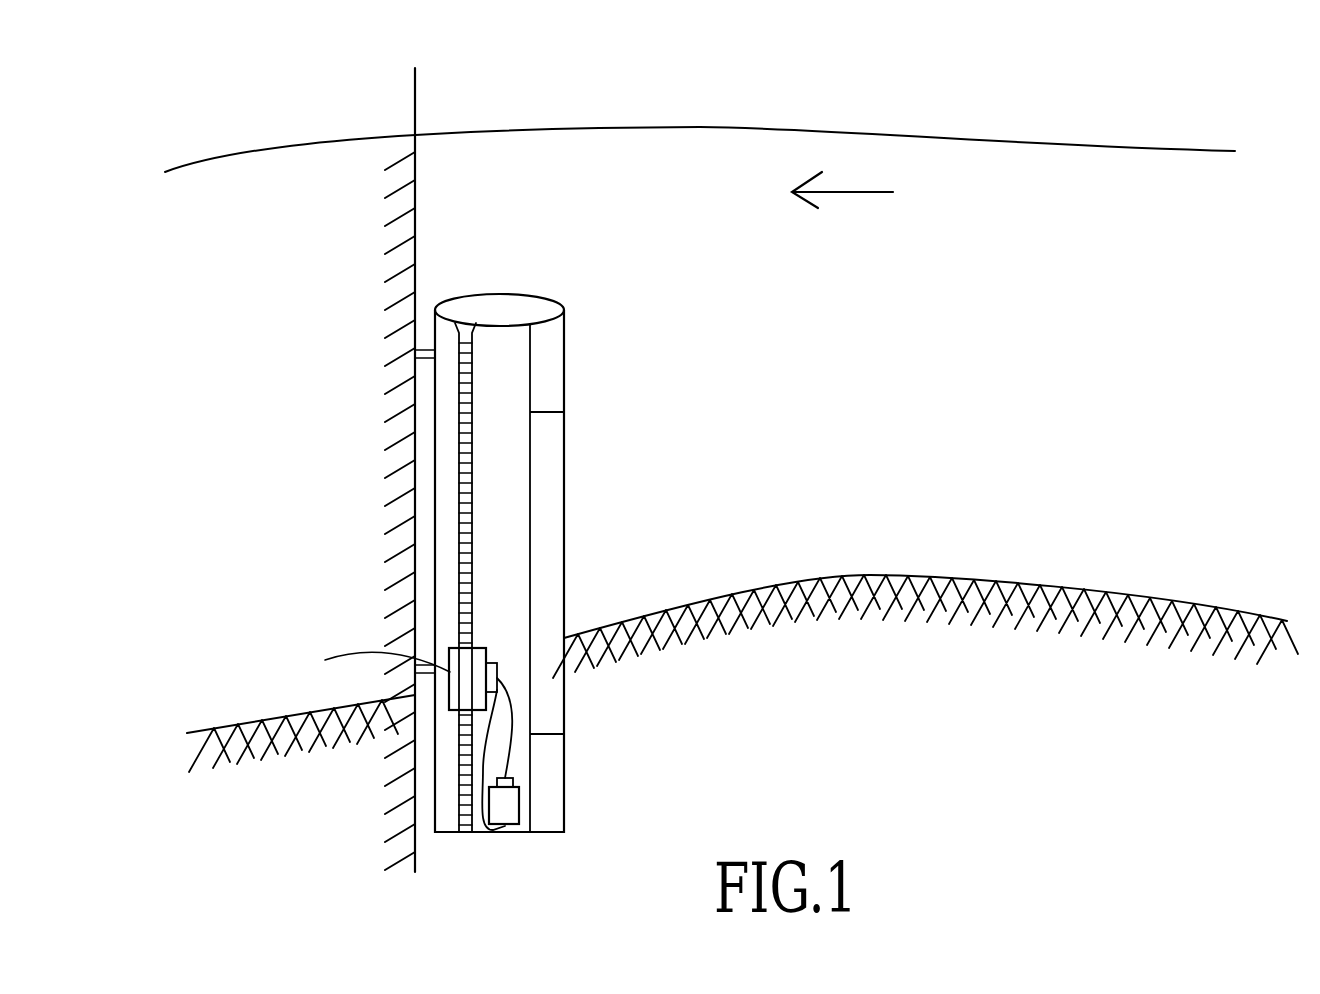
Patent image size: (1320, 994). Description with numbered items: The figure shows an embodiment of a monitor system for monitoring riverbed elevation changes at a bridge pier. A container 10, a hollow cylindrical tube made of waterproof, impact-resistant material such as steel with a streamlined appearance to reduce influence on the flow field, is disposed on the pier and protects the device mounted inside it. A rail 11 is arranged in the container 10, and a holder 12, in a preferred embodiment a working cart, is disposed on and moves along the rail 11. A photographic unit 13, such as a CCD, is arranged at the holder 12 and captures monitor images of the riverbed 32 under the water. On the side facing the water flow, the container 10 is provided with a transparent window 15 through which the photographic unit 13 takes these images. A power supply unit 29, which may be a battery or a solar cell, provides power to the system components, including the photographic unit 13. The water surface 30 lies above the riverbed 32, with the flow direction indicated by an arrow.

The container 10 is at (503, 305).
The rail 11 is at (470, 373).
The holder 12 is at (448, 560).
The photographic unit 13 is at (500, 663).
The transparent window 15 is at (550, 485).
The power supply unit 29 is at (519, 808).
The water surface 30 is at (415, 110).
The riverbed 32 is at (870, 575).